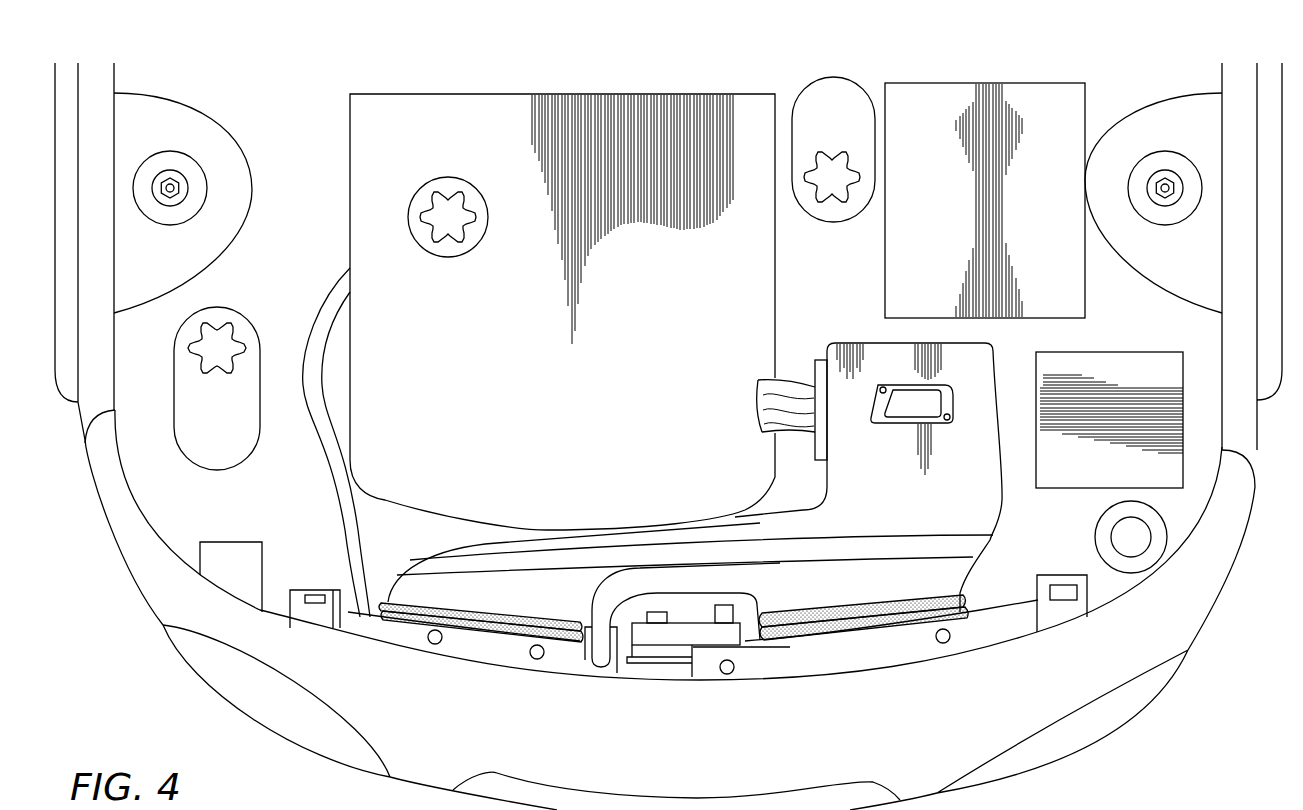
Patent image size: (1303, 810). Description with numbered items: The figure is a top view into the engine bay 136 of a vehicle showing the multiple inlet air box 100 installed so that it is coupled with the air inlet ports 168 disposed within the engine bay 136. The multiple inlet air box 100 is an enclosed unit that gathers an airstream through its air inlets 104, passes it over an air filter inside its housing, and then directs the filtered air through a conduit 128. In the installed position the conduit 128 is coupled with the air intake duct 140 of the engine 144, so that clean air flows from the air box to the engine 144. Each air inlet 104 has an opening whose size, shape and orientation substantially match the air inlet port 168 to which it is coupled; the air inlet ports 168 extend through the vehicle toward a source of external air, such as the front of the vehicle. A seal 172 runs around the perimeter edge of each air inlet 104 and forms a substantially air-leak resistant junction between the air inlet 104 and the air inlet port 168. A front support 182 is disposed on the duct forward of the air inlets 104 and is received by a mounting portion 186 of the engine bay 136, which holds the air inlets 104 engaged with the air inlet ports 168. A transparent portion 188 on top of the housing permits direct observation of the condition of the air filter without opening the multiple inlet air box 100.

The multiple inlet air box 100 is at (920, 513).
The air inlets 104 is at (482, 598).
The conduit 128 is at (787, 392).
The engine bay 136 is at (909, 45).
The air intake duct 140 is at (582, 462).
The engine 144 is at (340, 157).
The air inlet port 168 is at (493, 647).
The seal 172 is at (460, 623).
The front support 182 is at (600, 657).
The mounting portion 186 is at (585, 660).
The transparent portion 188 is at (897, 407).